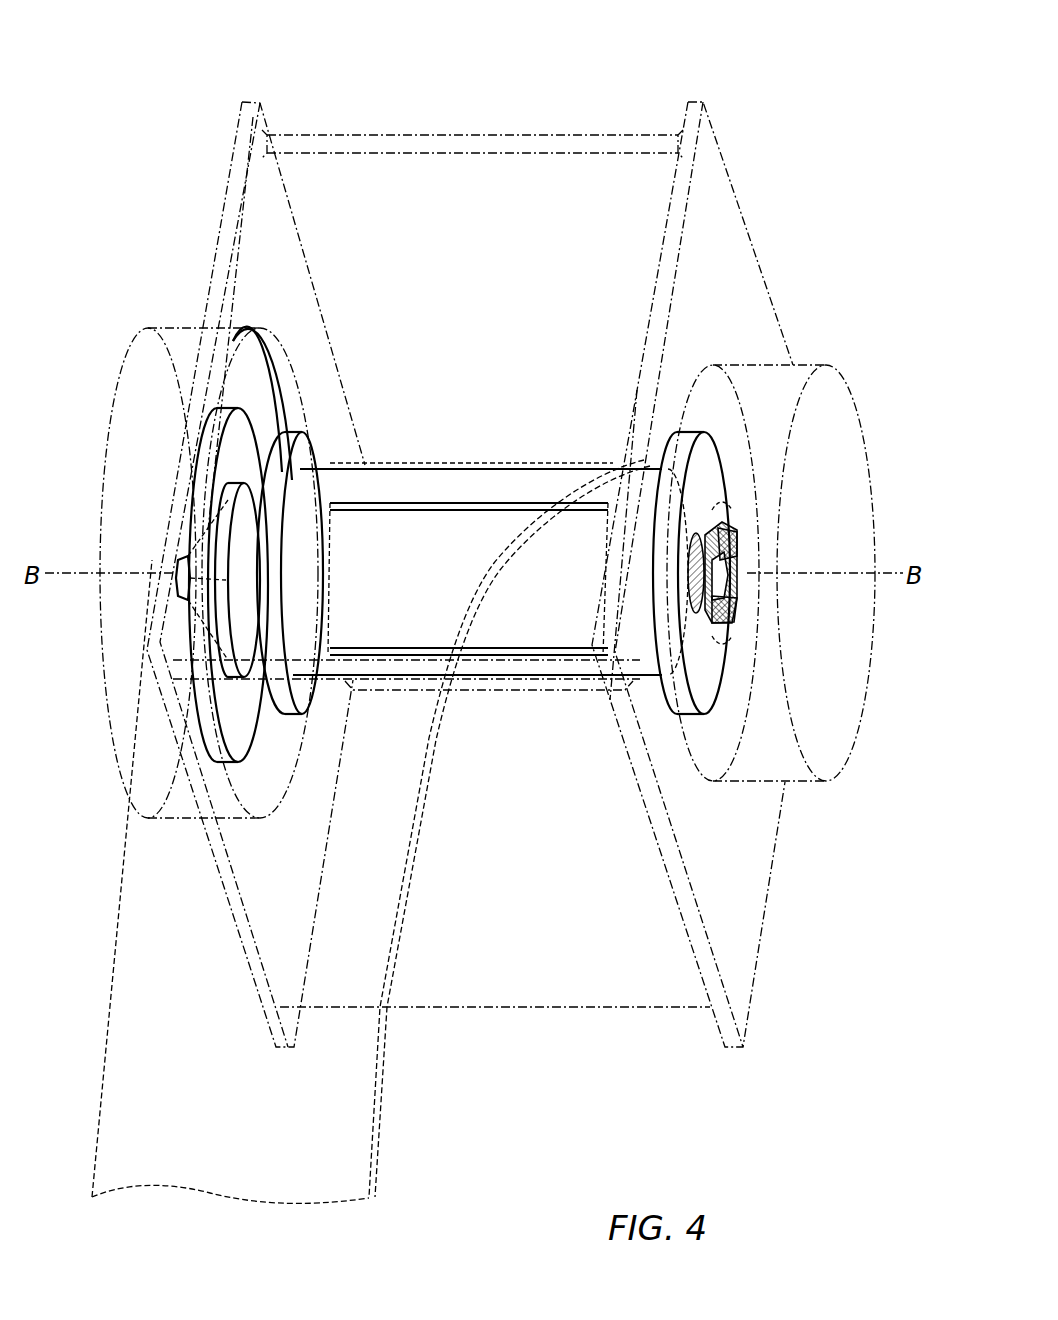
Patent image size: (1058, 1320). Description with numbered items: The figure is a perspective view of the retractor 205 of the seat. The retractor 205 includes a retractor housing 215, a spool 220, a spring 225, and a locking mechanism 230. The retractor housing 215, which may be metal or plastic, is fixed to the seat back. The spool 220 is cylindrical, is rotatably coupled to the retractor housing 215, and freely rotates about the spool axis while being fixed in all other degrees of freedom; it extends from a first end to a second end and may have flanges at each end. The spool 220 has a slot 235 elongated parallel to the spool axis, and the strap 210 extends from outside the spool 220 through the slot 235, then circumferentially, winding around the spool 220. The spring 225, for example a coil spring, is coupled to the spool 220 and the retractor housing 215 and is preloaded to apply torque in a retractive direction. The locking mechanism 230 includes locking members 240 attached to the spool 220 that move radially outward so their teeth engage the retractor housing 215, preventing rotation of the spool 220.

The retractor 205 is at (613, 43).
The strap 210 is at (384, 1089).
The retractor housing 215 is at (743, 205).
The spool 220 is at (288, 492).
The spring 225 is at (251, 373).
The locking mechanism 230 is at (737, 538).
The slot 235 is at (485, 500).
The locking member 240 is at (732, 552).